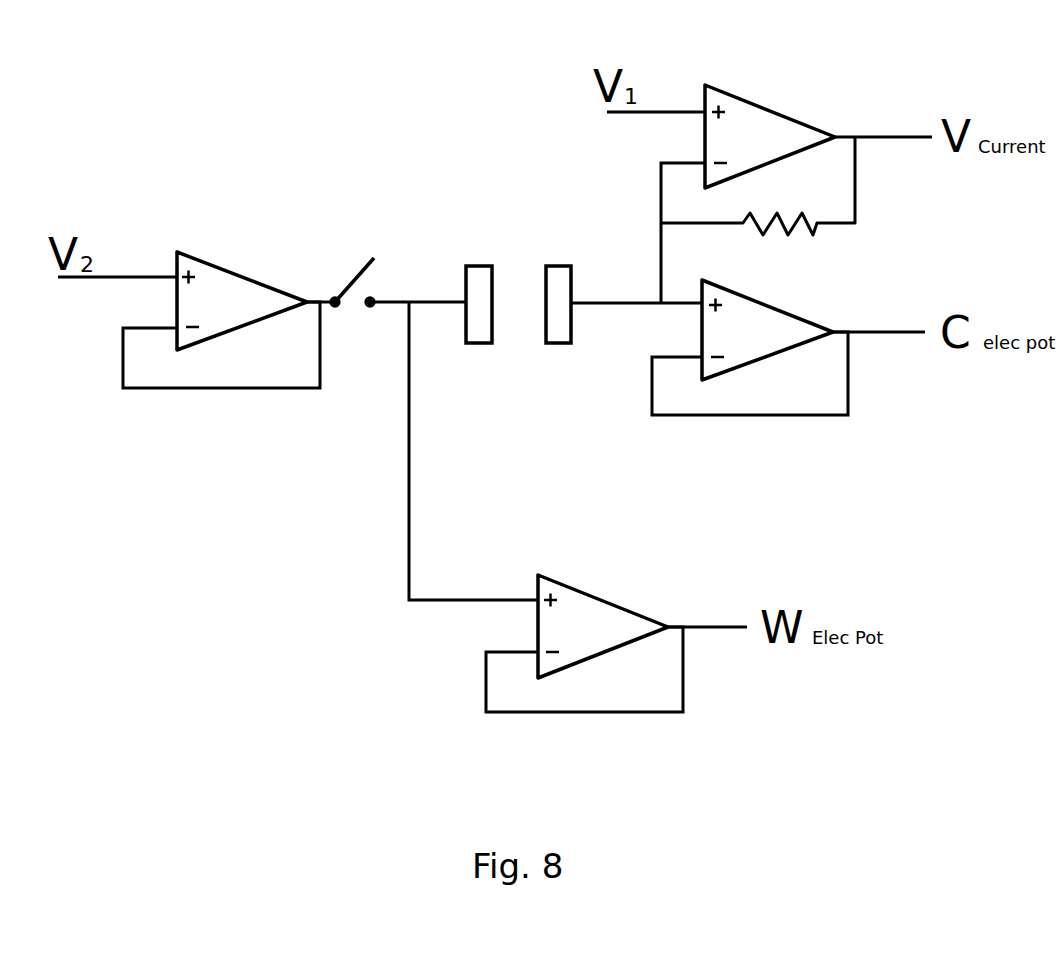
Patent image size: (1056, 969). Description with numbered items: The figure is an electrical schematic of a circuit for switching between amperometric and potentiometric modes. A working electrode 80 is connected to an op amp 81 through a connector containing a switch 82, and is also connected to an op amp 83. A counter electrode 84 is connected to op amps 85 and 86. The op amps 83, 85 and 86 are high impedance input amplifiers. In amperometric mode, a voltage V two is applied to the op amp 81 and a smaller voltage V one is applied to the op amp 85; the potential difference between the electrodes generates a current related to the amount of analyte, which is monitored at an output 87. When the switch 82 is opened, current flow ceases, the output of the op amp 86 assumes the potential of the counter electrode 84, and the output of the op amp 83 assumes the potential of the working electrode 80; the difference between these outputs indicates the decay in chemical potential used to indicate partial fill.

The working electrode 80 is at (480, 293).
The op amp 81 is at (228, 293).
The switch 82 is at (340, 291).
The op amp 83 is at (595, 628).
The counter electrode 84 is at (558, 323).
The op amp 85 is at (768, 132).
The op amp 86 is at (763, 338).
The output 87 is at (880, 132).